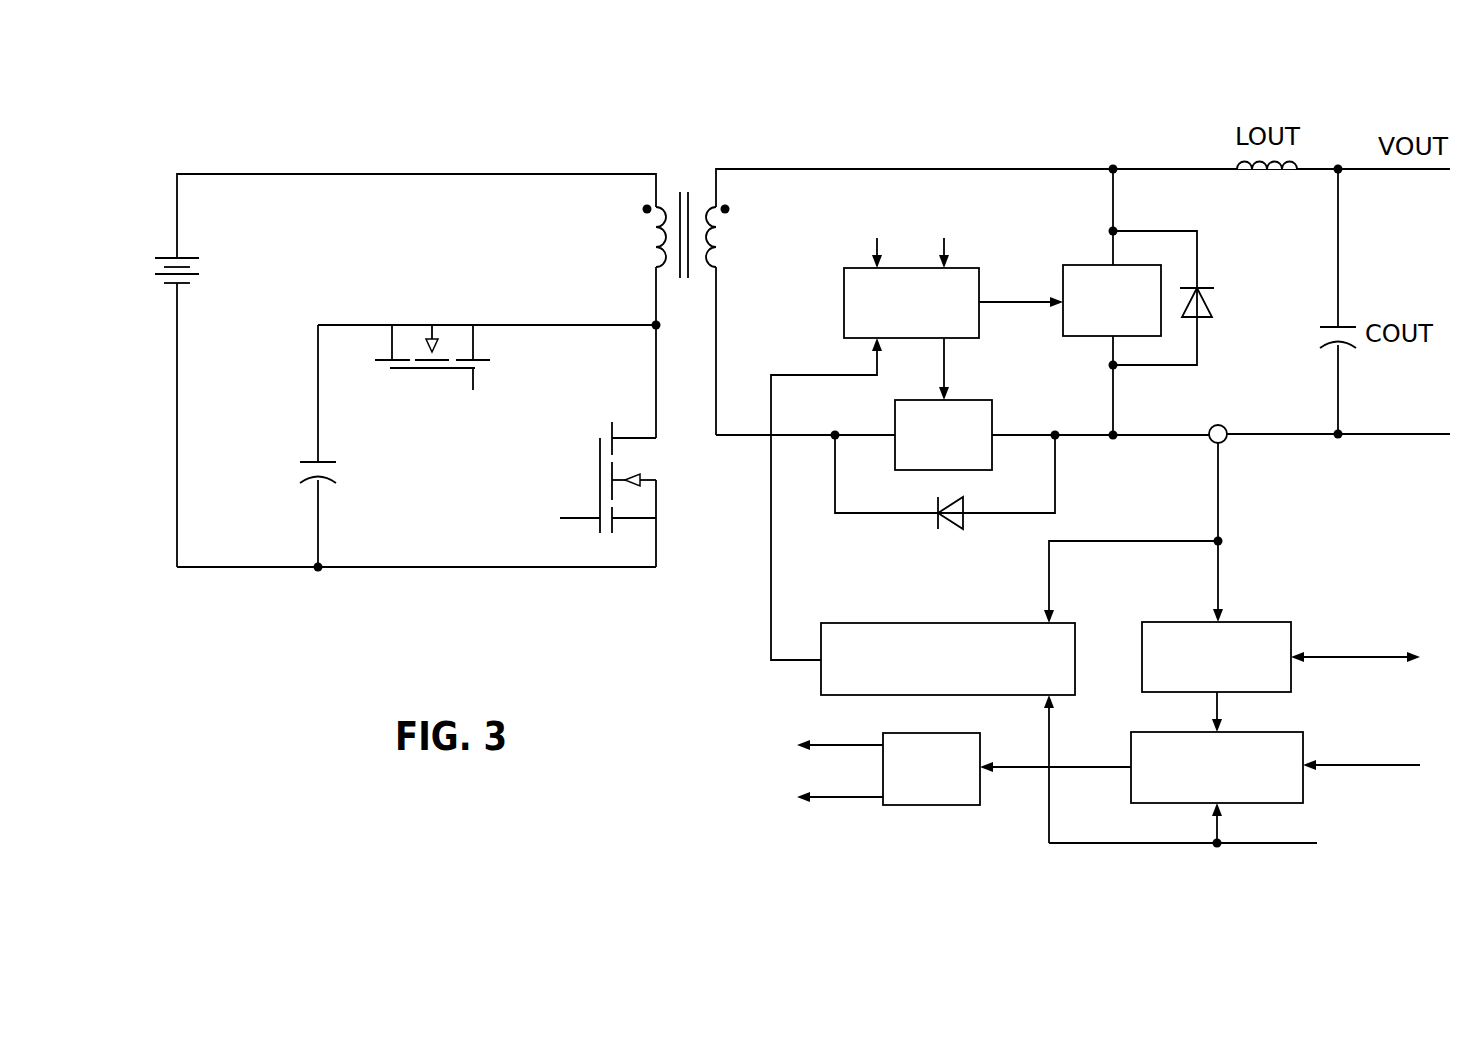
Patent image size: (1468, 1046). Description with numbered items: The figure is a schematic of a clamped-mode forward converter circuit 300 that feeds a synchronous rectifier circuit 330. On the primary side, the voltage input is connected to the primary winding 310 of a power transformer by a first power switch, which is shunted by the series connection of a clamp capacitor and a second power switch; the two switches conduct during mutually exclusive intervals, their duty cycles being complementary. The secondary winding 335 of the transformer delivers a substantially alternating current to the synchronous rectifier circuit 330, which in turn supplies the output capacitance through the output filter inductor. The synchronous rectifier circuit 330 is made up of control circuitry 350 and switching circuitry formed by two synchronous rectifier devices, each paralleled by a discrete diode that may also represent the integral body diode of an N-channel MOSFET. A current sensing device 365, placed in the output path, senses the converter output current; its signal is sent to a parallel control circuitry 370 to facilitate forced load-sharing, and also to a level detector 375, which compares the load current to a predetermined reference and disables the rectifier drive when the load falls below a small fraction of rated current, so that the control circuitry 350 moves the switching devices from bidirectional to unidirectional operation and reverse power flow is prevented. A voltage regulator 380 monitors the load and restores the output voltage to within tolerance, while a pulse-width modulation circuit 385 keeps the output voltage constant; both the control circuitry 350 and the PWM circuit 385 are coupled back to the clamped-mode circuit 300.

The clamped-mode forward converter circuit 300 is at (412, 146).
The primary winding 310 is at (626, 244).
The synchronous rectifier circuit 330 is at (1037, 381).
The secondary winding 335 is at (742, 227).
The control circuitry 350 is at (844, 303).
The current sensing device 365 is at (1209, 446).
The parallel control circuitry 370 is at (1187, 622).
The level detector 375 is at (892, 623).
The voltage regulator 380 is at (1303, 790).
The pulse-width modulation circuit 385 is at (933, 808).